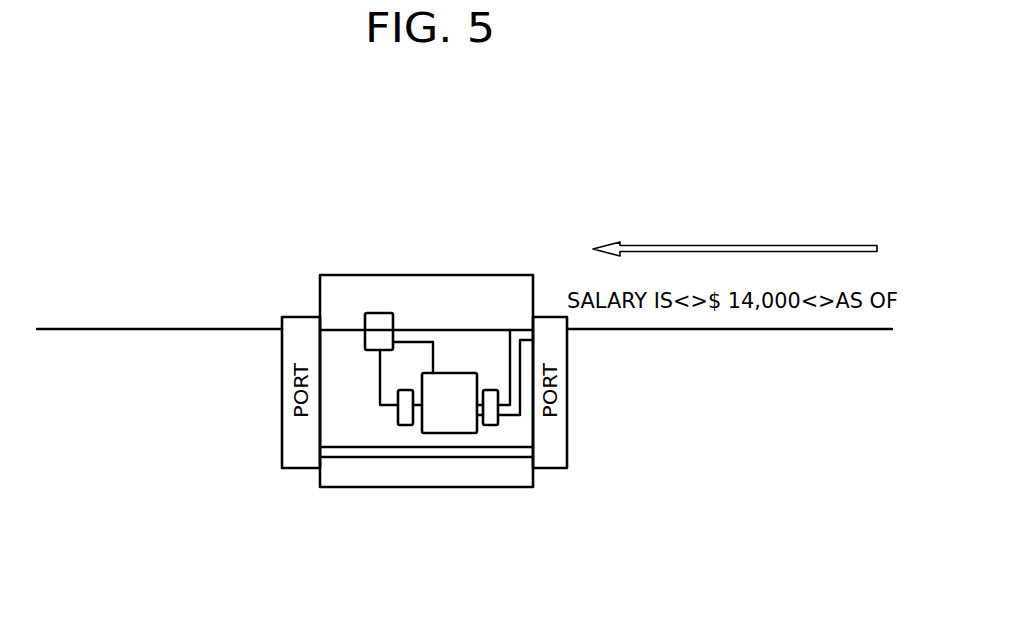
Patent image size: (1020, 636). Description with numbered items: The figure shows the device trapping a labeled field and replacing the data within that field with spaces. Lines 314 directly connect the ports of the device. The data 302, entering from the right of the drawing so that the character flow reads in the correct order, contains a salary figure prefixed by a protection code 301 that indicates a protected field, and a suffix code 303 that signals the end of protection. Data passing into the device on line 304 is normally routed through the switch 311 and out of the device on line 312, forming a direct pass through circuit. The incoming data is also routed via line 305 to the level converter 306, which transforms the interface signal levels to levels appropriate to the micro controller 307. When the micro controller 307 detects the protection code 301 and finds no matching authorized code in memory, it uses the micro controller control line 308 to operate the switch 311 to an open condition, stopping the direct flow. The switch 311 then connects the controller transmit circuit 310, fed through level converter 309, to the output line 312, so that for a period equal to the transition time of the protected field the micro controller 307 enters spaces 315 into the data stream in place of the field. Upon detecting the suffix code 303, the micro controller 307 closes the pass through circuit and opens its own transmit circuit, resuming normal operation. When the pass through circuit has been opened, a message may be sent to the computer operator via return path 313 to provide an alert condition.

The protection code 301 is at (698, 315).
The data 302 is at (773, 315).
The suffix code 303 is at (818, 315).
The line 304 is at (473, 330).
The line 305 is at (507, 403).
The level converter 306 is at (493, 425).
The micro controller 307 is at (442, 373).
The micro controller control line 308 is at (407, 340).
The level converter 309 is at (408, 425).
The circuit 310 is at (380, 392).
The switch 311 is at (373, 313).
The line 312 is at (345, 328).
The return path 313 is at (512, 418).
The lines 314 is at (350, 450).
The spaces 315 is at (193, 295).